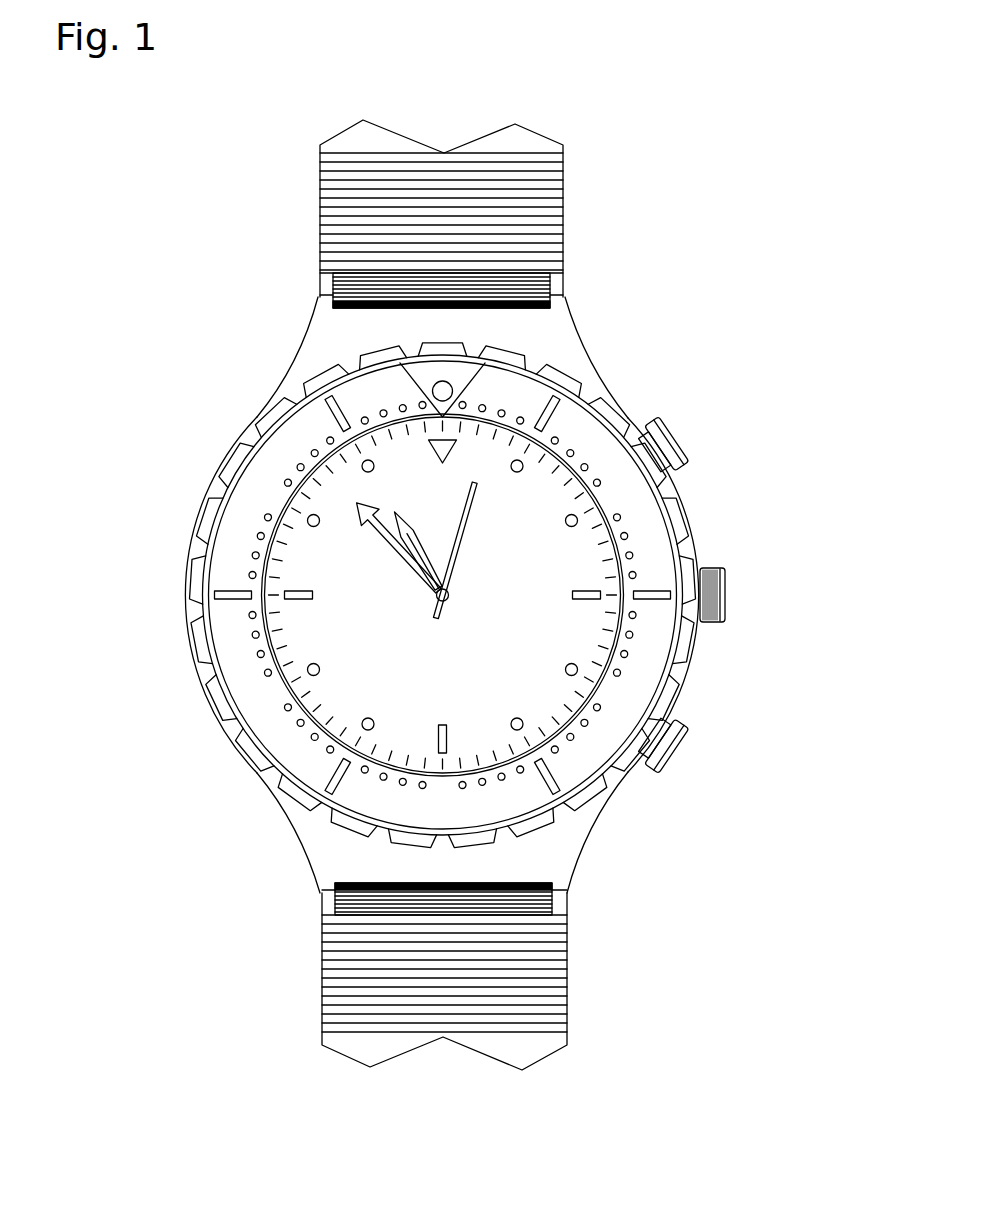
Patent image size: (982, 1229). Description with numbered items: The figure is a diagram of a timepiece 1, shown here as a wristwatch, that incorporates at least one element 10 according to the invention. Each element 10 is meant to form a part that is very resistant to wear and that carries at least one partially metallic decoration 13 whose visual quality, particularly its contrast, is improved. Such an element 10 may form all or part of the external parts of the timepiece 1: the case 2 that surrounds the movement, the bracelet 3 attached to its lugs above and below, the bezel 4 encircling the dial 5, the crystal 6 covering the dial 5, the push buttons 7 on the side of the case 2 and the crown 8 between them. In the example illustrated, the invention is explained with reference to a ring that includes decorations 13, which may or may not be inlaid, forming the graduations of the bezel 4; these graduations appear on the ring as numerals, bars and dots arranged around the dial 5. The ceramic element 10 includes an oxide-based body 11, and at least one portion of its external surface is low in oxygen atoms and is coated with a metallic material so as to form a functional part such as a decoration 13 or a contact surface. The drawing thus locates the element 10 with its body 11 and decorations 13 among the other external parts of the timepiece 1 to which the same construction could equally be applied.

The timepiece 1 is at (733, 250).
The case 2 is at (567, 337).
The bracelet 3 is at (548, 209).
The bezel 4 is at (243, 790).
The dial 5 is at (343, 487).
The crystal 6 is at (497, 602).
The push button 7 is at (667, 445).
The crown 8 is at (720, 597).
The element 10 is at (145, 460).
The oxide-based body 11 is at (230, 632).
The decoration 13 is at (236, 590).